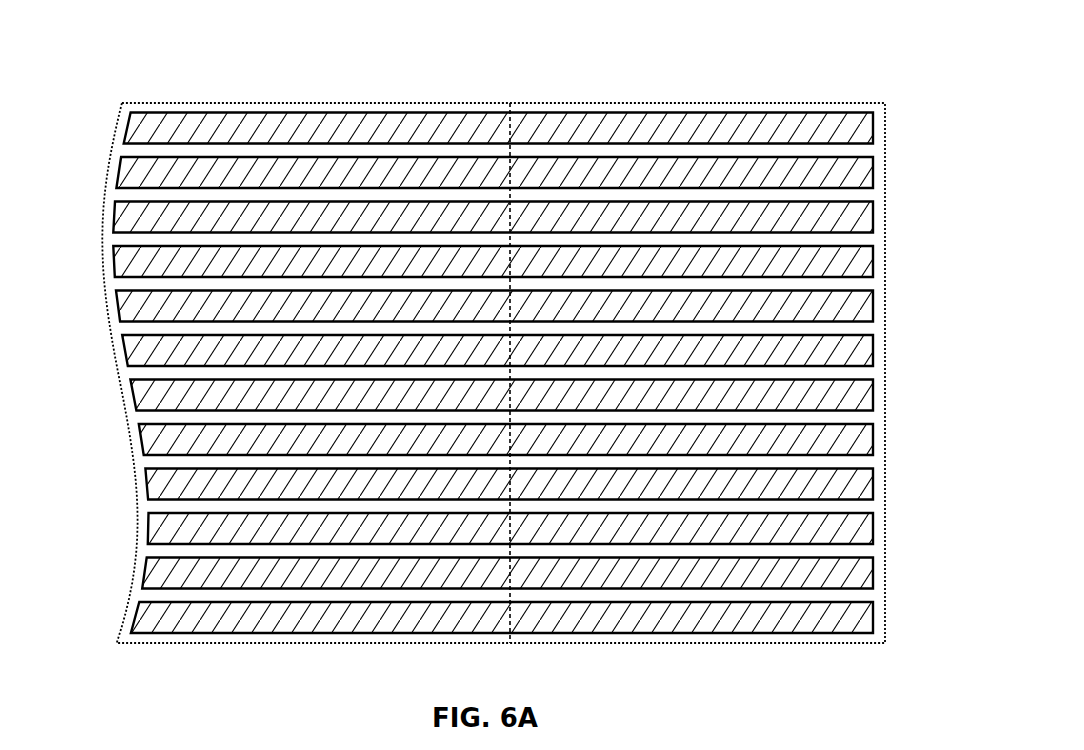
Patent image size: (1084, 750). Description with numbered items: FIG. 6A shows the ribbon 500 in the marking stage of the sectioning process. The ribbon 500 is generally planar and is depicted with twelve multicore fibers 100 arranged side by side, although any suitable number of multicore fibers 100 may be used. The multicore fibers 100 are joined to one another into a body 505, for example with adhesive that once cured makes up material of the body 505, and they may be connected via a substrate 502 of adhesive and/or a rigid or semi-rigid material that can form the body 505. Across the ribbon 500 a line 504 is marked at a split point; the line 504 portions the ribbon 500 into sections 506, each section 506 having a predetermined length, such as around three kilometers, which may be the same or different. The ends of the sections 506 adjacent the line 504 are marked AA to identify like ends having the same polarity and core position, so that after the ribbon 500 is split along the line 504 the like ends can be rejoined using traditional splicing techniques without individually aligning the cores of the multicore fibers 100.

The ribbon 500 is at (133, 50).
The multicore fiber 100 is at (874, 128).
The substrate 502 is at (143, 151).
The line 504 is at (511, 104).
The body 505 is at (885, 645).
The section 506 is at (334, 97).